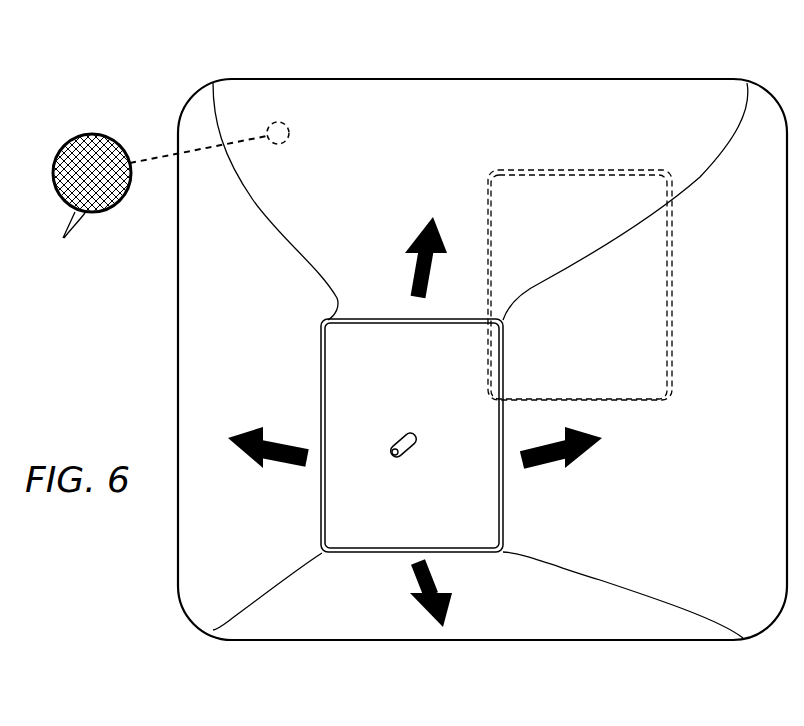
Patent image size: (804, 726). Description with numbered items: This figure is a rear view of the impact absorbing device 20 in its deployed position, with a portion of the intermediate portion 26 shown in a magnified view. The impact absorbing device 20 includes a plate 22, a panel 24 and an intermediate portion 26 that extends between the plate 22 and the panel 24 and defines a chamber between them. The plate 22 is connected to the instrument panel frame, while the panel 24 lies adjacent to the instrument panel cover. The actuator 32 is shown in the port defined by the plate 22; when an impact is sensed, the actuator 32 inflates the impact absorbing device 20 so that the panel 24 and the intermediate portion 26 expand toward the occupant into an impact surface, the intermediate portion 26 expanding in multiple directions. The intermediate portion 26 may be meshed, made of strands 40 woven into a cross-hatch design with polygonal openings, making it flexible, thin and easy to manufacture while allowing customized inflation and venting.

The impact absorbing device 20 is at (118, 67).
The plate 22 is at (478, 532).
The panel 24 is at (600, 168).
The intermediate portion 26 is at (210, 535).
The actuator 32 is at (392, 456).
The strands 40 is at (63, 238).